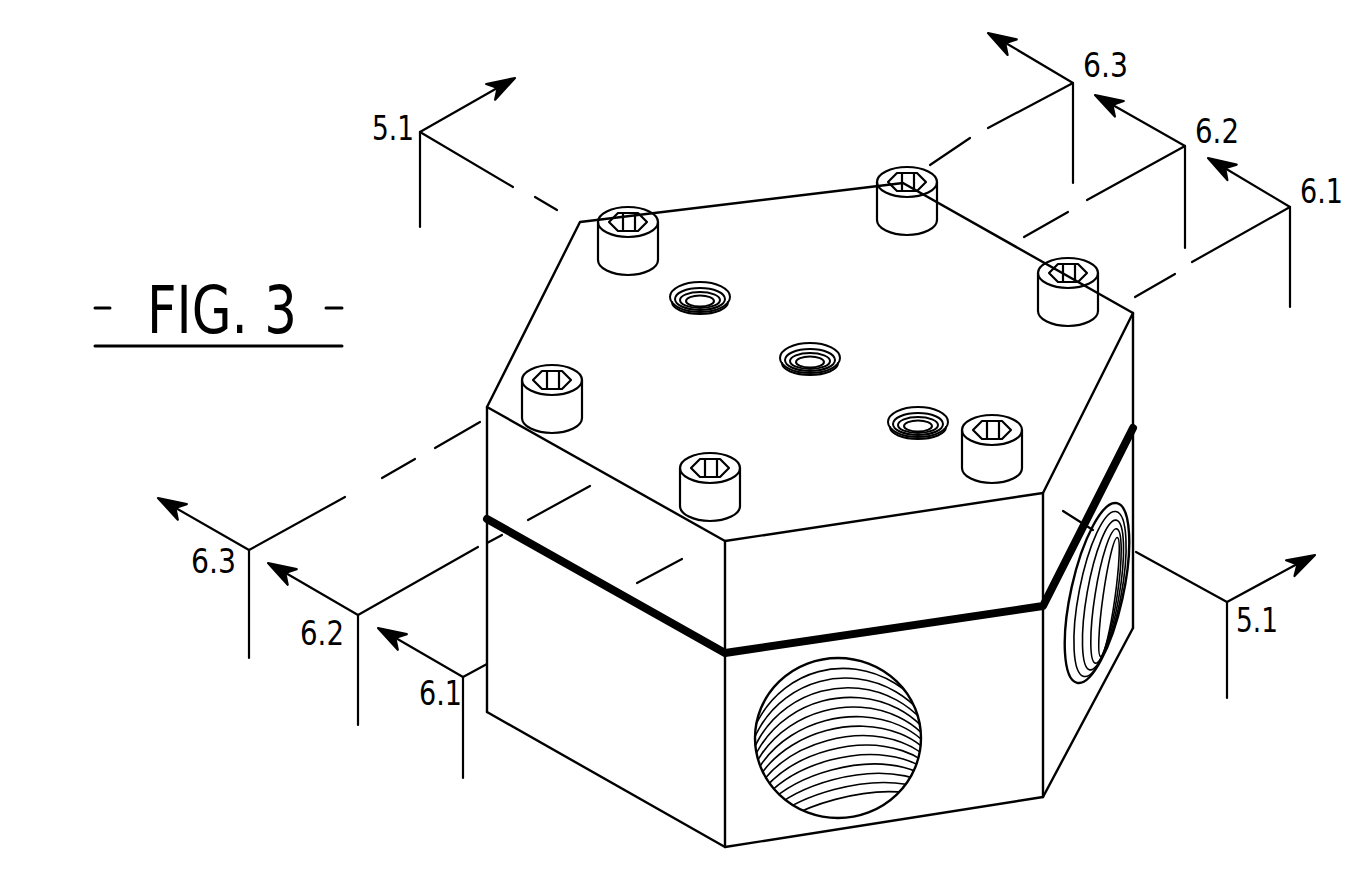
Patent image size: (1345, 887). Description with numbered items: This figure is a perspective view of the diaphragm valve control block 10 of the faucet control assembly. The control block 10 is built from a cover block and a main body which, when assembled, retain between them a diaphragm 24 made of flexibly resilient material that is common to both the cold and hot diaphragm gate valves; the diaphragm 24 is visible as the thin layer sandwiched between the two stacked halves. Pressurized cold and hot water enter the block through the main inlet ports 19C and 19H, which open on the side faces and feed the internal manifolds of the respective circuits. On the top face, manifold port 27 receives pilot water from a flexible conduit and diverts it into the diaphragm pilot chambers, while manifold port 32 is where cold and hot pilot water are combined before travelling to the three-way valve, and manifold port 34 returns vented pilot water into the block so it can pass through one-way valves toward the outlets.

The control block 10 is at (558, 755).
The diaphragm 24 is at (1133, 428).
The manifold port 27 is at (843, 355).
The manifold port 32 is at (918, 440).
The manifold port 34 is at (713, 283).
The main inlet port 19H is at (908, 777).
The main inlet port 19C is at (1080, 687).